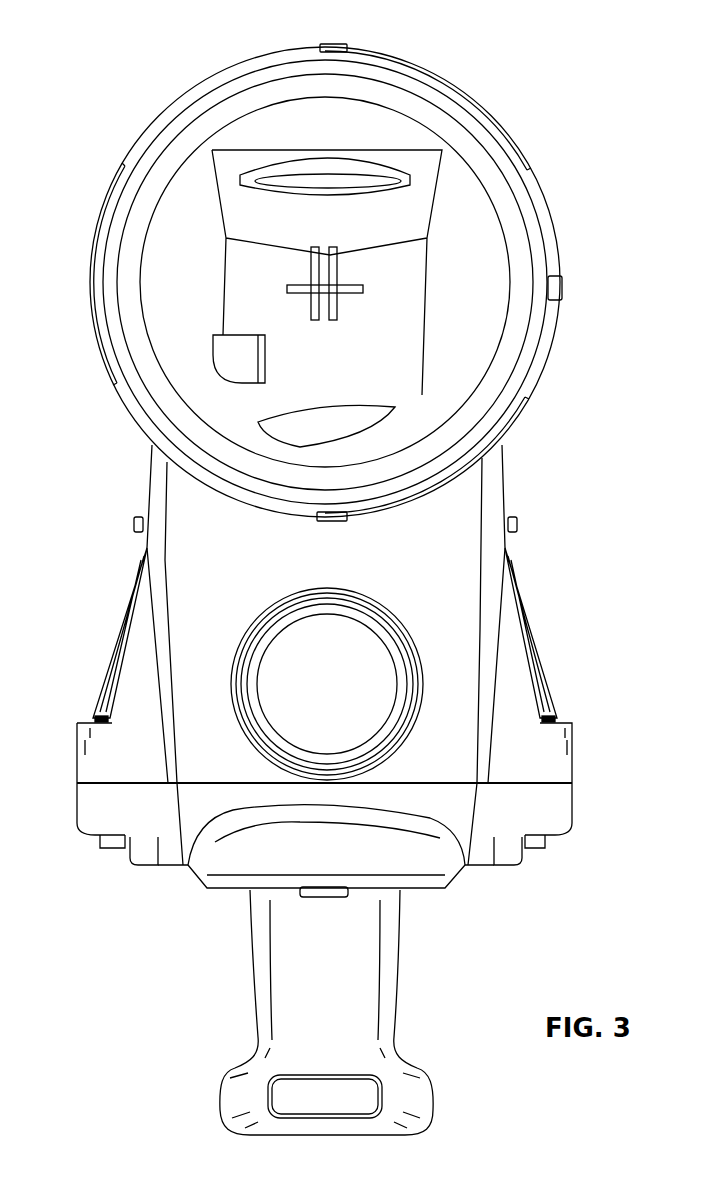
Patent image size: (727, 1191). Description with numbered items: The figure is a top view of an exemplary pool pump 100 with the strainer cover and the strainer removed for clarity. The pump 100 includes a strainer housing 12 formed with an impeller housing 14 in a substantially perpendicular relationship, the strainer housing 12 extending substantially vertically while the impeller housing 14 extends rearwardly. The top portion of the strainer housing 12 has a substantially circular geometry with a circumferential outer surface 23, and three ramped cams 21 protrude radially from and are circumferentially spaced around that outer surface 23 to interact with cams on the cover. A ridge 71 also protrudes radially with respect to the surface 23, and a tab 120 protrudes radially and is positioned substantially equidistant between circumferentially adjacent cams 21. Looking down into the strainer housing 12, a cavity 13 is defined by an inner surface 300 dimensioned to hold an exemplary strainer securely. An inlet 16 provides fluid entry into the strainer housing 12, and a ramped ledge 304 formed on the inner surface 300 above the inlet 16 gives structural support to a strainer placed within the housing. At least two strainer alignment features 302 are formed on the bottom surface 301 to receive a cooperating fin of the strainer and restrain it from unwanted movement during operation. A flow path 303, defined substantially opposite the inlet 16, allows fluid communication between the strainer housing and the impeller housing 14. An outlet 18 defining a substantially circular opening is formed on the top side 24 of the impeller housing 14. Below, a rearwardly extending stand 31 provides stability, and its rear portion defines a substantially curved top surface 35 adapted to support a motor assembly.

The pool pump 100 is at (165, 60).
The strainer housing 12 is at (104, 401).
The cavity 13 is at (160, 260).
The impeller housing 14 is at (455, 586).
The inlet 16 is at (320, 177).
The outlet 18 is at (323, 600).
The ramped cams 21 is at (390, 55).
The circumferential outer surface 23 is at (522, 207).
The top side 24 is at (176, 506).
The stand 31 is at (245, 974).
The curved top surface 35 is at (366, 1097).
The ridge 71 is at (546, 356).
The tab 120 is at (562, 288).
The inner surface 300 is at (152, 318).
The bottom surface 301 is at (411, 334).
The strainer alignment features 302 is at (337, 313).
The flow path 303 is at (278, 424).
The ramped ledge 304 is at (378, 127).